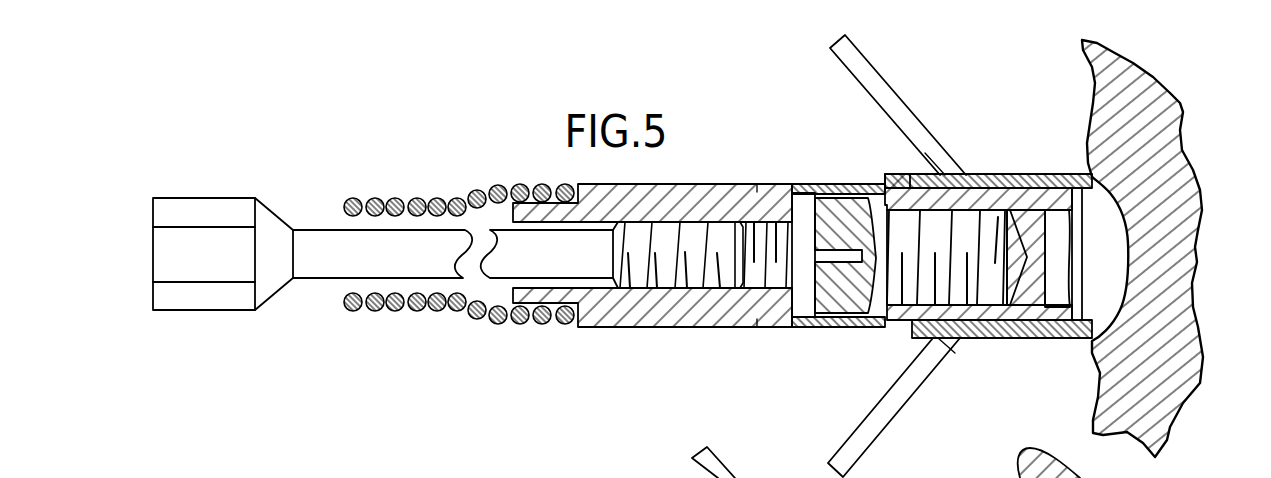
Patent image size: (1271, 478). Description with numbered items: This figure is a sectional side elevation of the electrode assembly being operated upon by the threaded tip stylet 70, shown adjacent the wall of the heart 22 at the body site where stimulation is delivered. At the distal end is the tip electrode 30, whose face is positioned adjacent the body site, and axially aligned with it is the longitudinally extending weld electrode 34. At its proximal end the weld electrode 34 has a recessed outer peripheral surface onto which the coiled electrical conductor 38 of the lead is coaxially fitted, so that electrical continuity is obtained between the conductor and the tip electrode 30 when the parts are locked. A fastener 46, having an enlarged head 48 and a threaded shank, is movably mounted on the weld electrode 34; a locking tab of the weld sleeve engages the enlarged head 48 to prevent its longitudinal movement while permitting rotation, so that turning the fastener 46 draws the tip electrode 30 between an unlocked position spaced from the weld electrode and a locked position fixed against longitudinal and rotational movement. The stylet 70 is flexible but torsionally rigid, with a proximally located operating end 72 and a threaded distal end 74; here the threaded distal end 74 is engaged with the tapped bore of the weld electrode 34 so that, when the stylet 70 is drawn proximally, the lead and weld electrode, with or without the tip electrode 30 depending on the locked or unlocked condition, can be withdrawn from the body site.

The heart 22 is at (1188, 108).
The tip electrode 30 is at (1014, 133).
The weld electrode 34 is at (645, 351).
The electrical conductor 38 is at (418, 320).
The fastener 46 is at (834, 243).
The enlarged head 48 is at (846, 287).
The threaded tip stylet 70 is at (397, 240).
The operating end 72 is at (206, 213).
The threaded distal end 74 is at (713, 270).